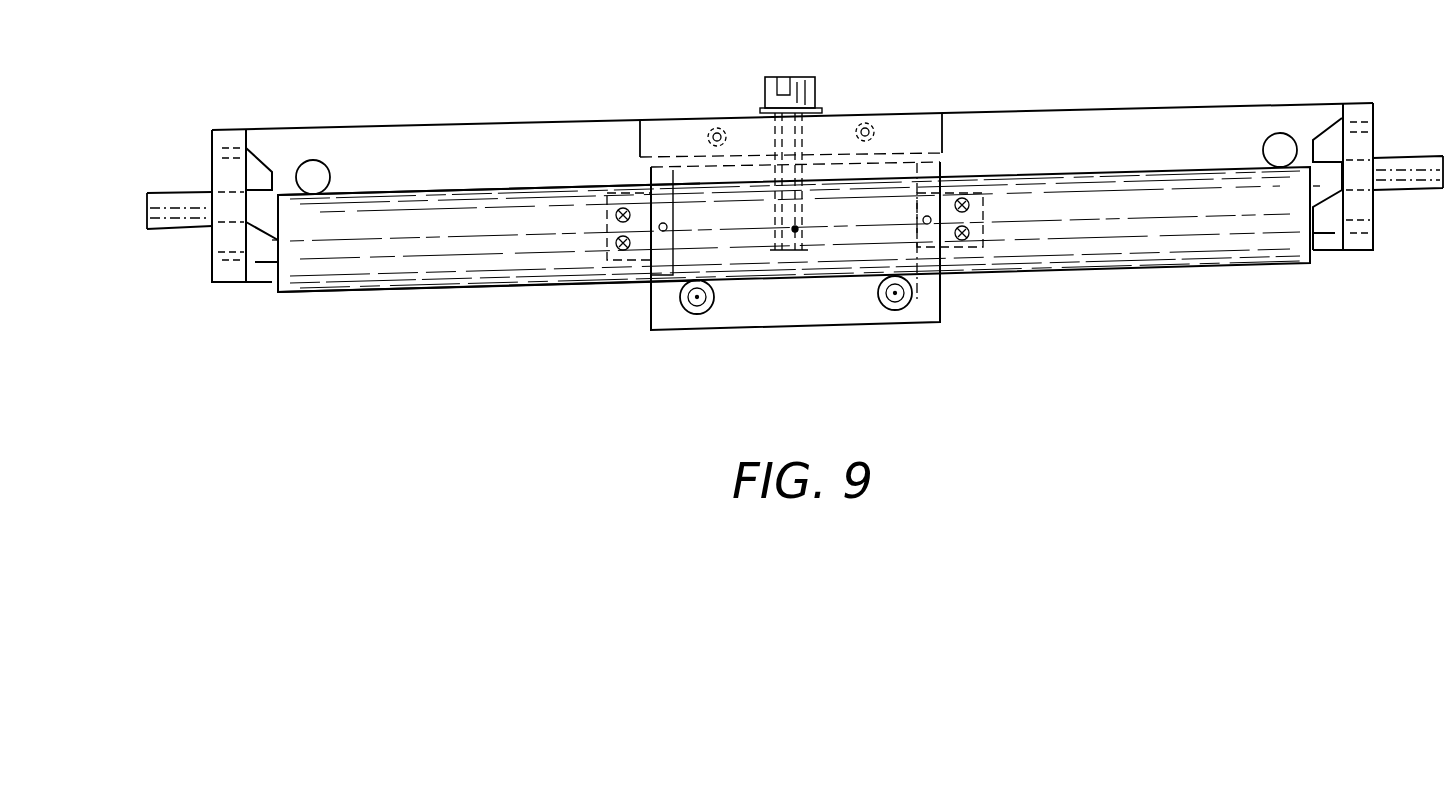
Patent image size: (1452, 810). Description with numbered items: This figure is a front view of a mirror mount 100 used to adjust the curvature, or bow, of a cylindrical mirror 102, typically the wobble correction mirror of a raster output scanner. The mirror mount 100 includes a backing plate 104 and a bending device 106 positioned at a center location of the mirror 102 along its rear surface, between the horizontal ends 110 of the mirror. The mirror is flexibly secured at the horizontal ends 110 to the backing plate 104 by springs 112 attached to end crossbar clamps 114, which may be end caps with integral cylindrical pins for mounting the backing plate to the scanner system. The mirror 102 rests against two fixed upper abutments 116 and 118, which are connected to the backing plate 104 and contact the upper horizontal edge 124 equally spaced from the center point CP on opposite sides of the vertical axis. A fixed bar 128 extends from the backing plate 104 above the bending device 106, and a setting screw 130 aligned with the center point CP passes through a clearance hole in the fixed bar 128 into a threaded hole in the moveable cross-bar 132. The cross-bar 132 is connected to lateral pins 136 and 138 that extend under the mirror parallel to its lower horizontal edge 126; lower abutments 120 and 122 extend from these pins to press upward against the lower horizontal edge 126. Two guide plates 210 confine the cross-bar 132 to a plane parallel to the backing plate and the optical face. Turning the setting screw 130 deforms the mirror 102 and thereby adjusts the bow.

The mirror mount 100 is at (1048, 350).
The cylindrical mirror 102 is at (1093, 259).
The backing plate 104 is at (585, 122).
The bending device 106 is at (983, 31).
The horizontal ends 110 is at (272, 288).
The springs 112 is at (262, 163).
The end crossbar clamps 114 is at (232, 270).
The upper abutment 116 is at (315, 166).
The upper abutment 118 is at (1278, 136).
The lower abutment 120 is at (690, 300).
The lower abutment 122 is at (888, 300).
The upper horizontal edge 124 is at (412, 190).
The lower horizontal edge 126 is at (410, 293).
The fixed bar 128 is at (905, 118).
The setting screw 130 is at (800, 83).
The cross-bar 132 is at (652, 300).
The lateral pin 136 is at (695, 305).
The lateral pin 138 is at (897, 300).
The guide plates 210 is at (604, 213).
The center point CP is at (798, 234).